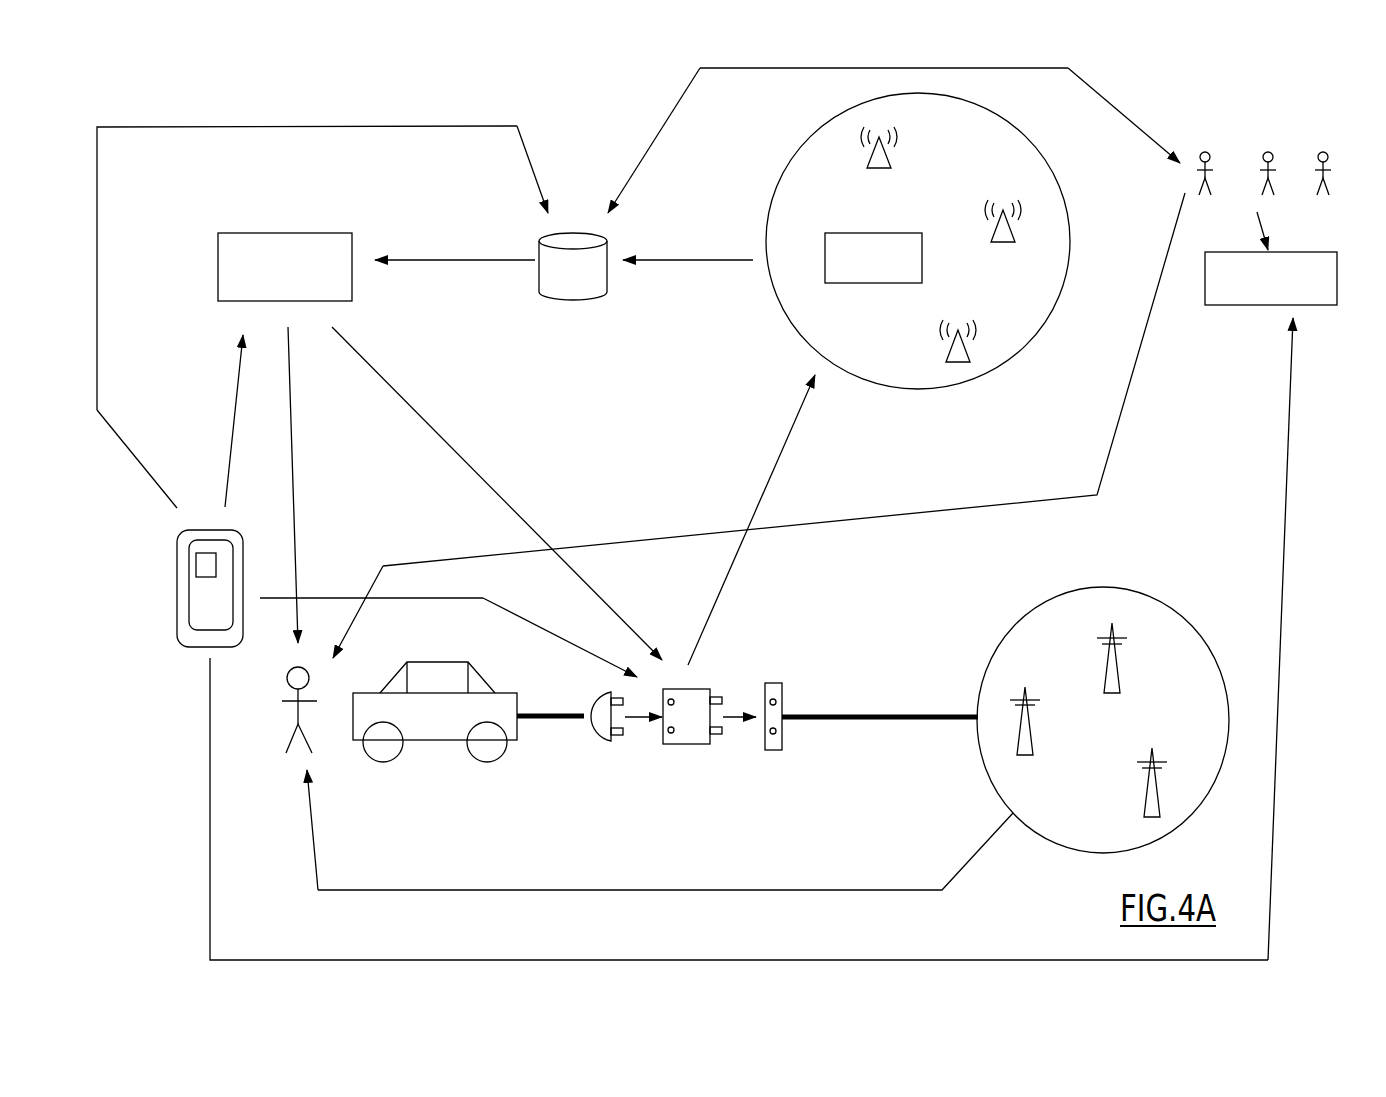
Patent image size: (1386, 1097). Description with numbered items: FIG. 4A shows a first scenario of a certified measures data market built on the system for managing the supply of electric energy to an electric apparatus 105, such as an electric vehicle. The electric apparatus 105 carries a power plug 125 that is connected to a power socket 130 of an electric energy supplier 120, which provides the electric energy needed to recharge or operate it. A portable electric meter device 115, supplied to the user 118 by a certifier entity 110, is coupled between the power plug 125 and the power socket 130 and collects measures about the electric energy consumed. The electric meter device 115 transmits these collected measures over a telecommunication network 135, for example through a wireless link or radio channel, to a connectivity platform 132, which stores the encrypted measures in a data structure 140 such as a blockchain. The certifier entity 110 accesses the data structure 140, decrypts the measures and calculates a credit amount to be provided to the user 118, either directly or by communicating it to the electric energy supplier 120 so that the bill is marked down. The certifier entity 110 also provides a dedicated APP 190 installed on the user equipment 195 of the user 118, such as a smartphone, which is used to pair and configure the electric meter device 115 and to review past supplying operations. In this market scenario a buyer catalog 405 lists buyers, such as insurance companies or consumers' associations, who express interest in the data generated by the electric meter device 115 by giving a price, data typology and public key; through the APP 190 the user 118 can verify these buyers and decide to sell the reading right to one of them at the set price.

The electric apparatus 105 is at (493, 762).
The certifier entity 110 is at (285, 267).
The electric meter device 115 is at (705, 744).
The user 118 is at (285, 734).
The electric energy supplier 120 is at (987, 670).
The power plug 125 is at (613, 742).
The power socket 130 is at (782, 750).
The connectivity platform 132 is at (873, 258).
The telecommunication network 135 is at (918, 279).
The data structure 140 is at (580, 297).
The APP 190 is at (196, 570).
The user equipment 195 is at (166, 621).
The buyer catalog 405 is at (1271, 278).